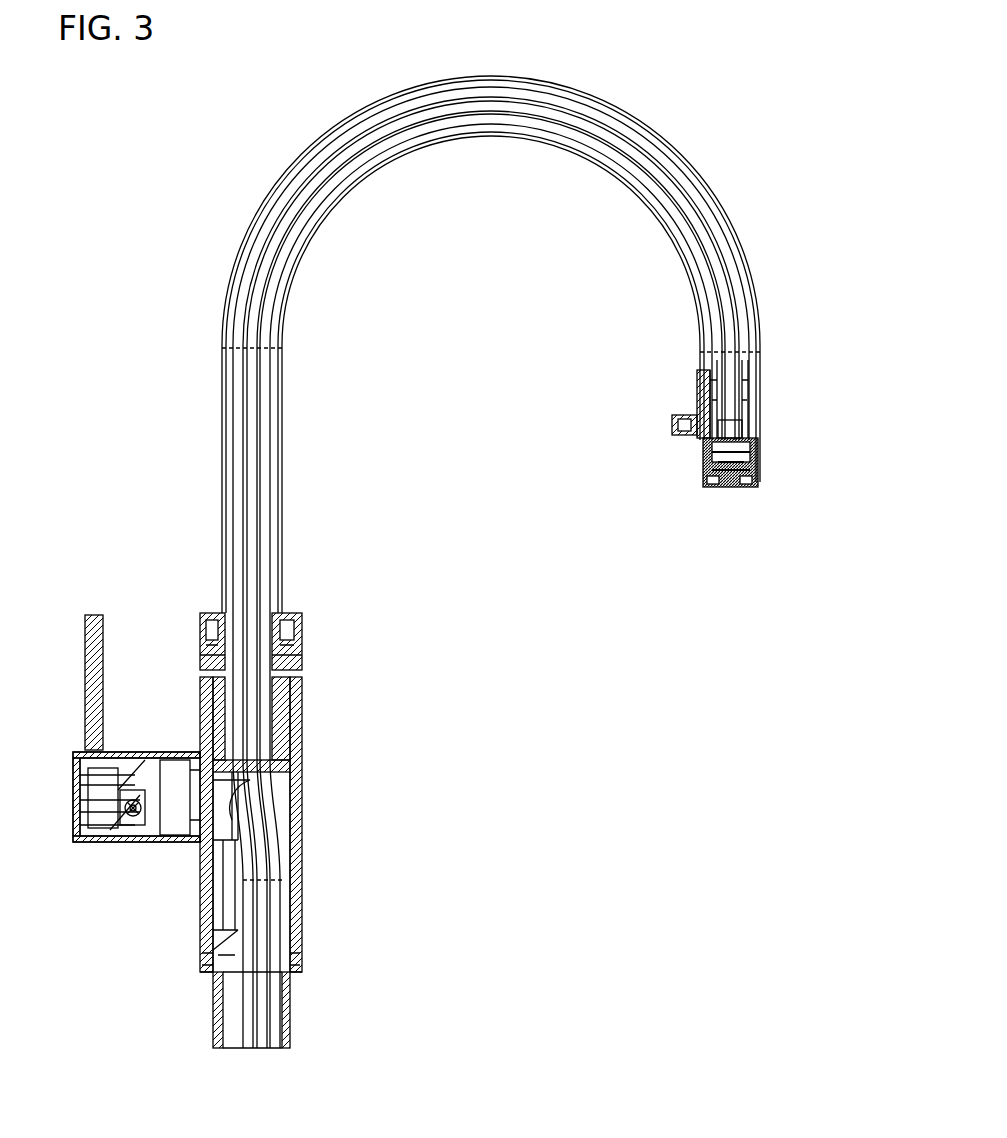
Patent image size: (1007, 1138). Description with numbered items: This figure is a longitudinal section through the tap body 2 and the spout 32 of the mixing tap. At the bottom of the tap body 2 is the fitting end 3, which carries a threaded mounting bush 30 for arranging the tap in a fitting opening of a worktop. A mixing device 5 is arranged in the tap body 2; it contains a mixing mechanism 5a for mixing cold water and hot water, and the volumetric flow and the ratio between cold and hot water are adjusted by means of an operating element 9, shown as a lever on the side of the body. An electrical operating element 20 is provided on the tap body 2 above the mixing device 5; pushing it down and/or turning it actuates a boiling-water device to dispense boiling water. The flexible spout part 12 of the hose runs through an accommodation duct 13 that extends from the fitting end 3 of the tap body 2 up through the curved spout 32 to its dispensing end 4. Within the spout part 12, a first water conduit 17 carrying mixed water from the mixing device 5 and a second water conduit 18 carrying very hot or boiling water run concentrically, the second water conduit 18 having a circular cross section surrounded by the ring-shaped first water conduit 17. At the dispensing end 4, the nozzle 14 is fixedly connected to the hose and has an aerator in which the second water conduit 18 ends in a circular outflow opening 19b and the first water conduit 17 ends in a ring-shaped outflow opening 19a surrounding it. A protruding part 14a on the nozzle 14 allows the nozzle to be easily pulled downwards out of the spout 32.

The tap body 2 is at (300, 740).
The fitting end 3 is at (318, 996).
The dispensing end 4 is at (768, 443).
The mixing device 5 is at (152, 712).
The mixing mechanism 5a is at (133, 812).
The operating element 9 is at (88, 642).
The spout part 12 is at (233, 388).
The accommodation duct 13 is at (288, 498).
The nozzle 14 is at (757, 484).
The protruding part 14a is at (672, 427).
The first water conduit 17 is at (268, 410).
The second water conduit 18 is at (267, 285).
The ring-shaped outflow opening 19a is at (751, 487).
The circular outflow opening 19b is at (717, 487).
The electrical operating element 20 is at (302, 634).
The threaded mounting bush 30 is at (213, 996).
The spout 32 is at (290, 163).